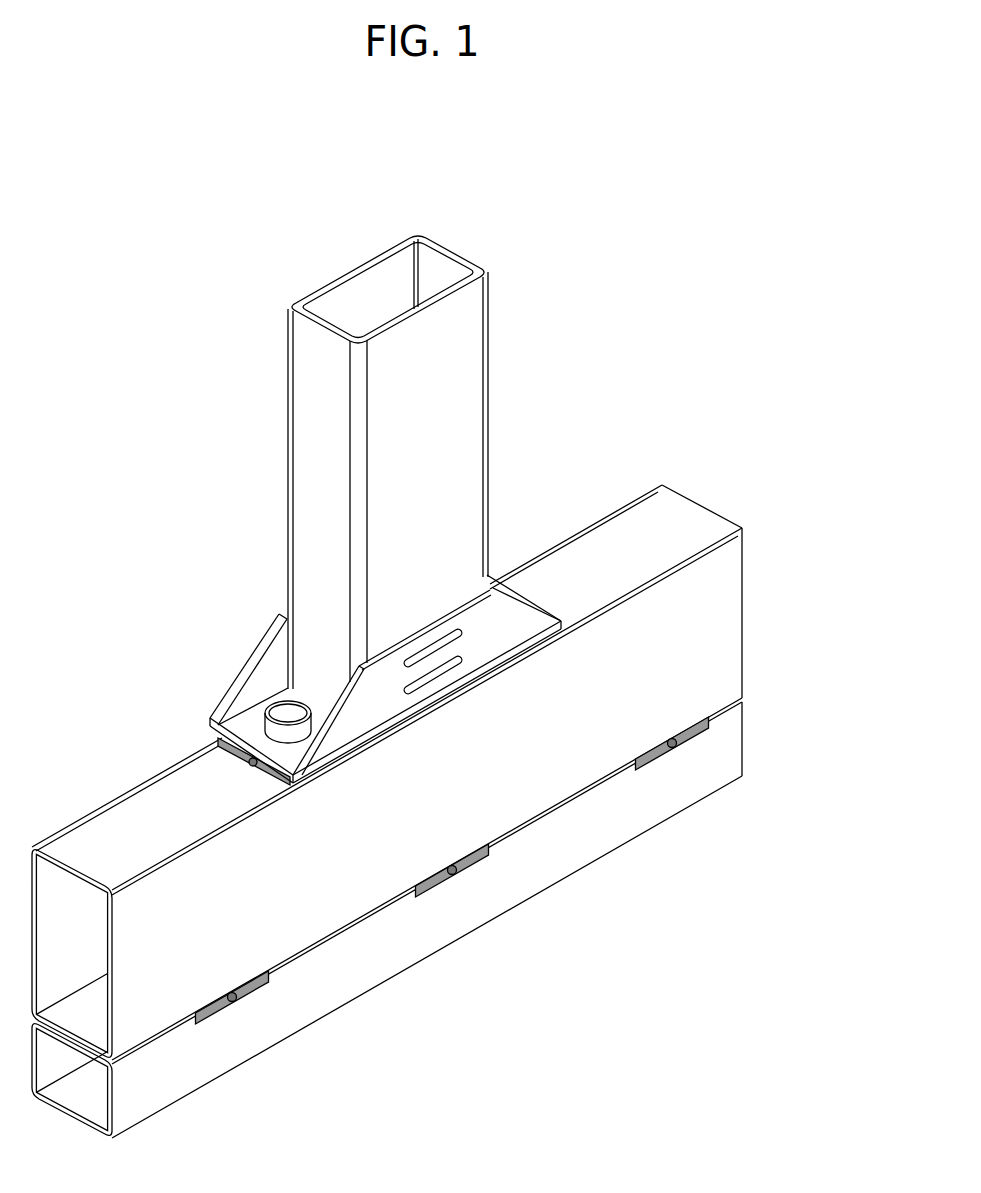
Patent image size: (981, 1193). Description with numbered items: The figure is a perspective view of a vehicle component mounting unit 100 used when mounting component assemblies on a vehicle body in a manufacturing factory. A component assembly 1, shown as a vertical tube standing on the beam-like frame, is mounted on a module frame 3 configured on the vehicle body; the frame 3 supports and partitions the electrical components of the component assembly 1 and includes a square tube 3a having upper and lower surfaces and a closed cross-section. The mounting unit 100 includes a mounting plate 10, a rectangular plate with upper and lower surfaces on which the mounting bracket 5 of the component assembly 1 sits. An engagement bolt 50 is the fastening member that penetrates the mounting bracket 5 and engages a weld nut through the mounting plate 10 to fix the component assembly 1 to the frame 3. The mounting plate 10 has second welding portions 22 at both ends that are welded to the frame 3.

The vehicle component mounting unit 100 is at (405, 171).
The component assembly 1 is at (519, 490).
The module frame 3 is at (752, 604).
The square tube 3a is at (720, 645).
The mounting plate 10 is at (341, 776).
The mounting bracket 5 is at (249, 722).
The engagement bolt 50 is at (283, 709).
The second welding portion 22 is at (240, 760).